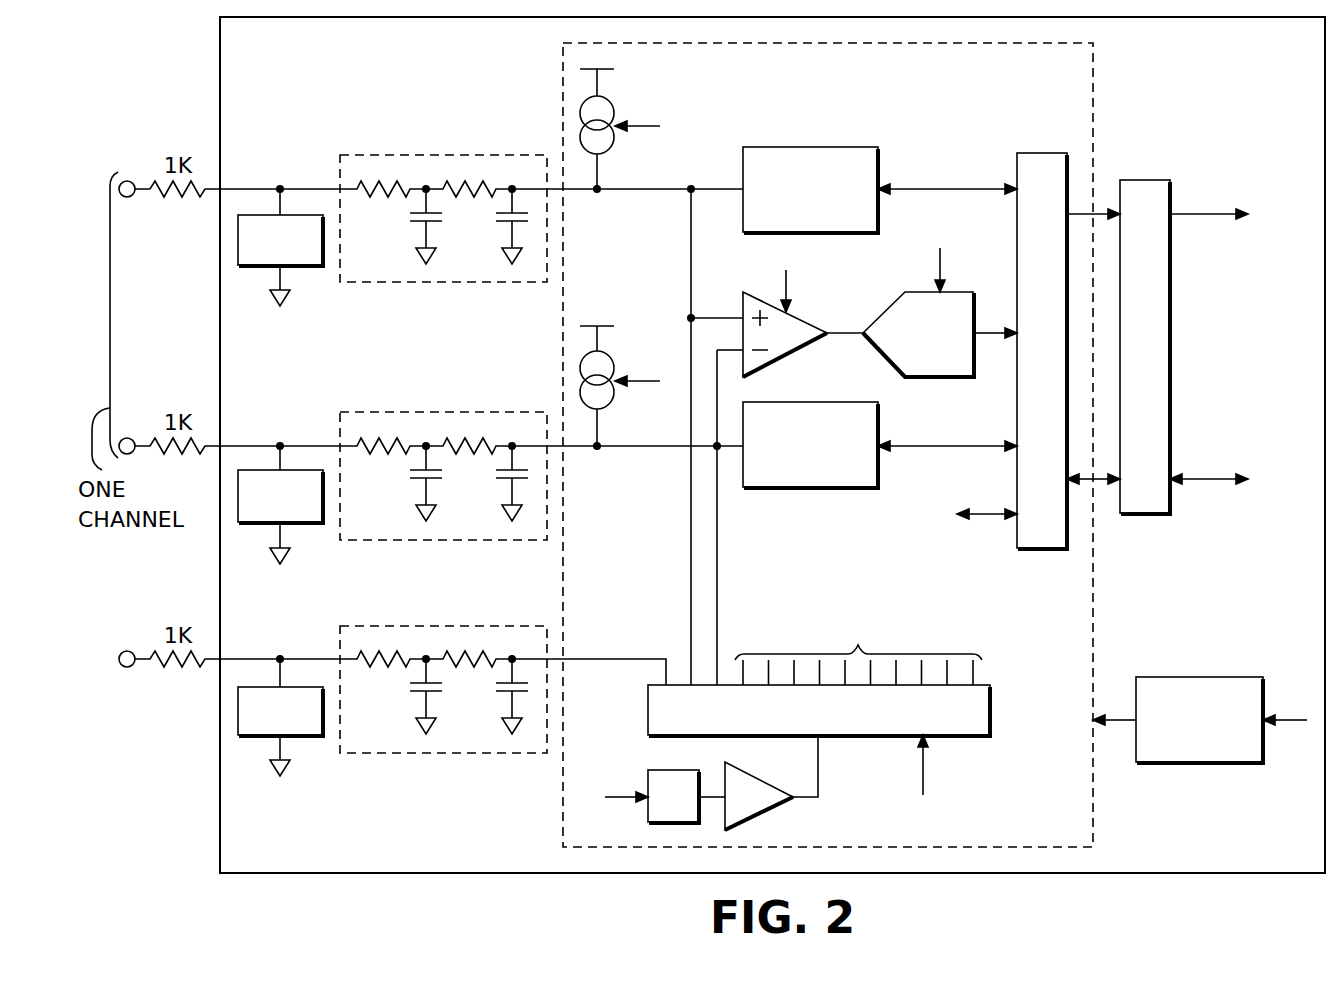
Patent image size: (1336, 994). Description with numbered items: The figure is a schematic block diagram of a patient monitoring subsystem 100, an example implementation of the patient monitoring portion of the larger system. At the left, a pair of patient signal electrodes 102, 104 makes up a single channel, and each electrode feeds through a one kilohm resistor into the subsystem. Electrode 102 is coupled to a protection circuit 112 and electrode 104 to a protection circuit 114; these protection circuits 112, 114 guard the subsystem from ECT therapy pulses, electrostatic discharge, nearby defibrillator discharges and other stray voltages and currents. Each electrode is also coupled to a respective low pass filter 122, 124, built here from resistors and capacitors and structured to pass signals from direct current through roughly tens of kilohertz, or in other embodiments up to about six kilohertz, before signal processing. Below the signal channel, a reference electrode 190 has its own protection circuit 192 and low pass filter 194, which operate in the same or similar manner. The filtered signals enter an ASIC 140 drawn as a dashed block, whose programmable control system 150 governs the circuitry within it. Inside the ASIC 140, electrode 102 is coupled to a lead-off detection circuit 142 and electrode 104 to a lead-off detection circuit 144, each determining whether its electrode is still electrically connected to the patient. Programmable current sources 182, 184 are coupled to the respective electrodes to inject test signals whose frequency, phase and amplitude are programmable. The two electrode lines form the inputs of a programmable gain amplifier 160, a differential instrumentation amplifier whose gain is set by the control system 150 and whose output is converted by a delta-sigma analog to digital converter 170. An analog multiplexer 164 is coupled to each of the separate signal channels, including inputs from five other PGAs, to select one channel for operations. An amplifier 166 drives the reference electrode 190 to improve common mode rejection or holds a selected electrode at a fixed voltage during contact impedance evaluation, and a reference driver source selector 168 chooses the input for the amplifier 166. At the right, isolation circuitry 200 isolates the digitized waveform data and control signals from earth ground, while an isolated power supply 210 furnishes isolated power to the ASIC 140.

The patient monitoring subsystem 100 is at (220, 62).
The patient signal electrode 102 is at (126, 181).
The patient signal electrode 104 is at (132, 438).
The reference electrode 190 is at (127, 651).
The protection circuit 112 is at (302, 268).
The protection circuit 114 is at (302, 525).
The protection circuit 192 is at (302, 738).
The low pass filter 122 is at (443, 155).
The low pass filter 124 is at (443, 412).
The low pass filter 194 is at (443, 626).
The ASIC 140 is at (1093, 72).
The lead-off detection circuit 142 is at (878, 155).
The lead-off detection circuit 144 is at (808, 488).
The control system 150 is at (1042, 153).
The programmable gain amplifier 160 is at (734, 298).
The analog multiplexer 164 is at (990, 716).
The amplifier 166 is at (762, 812).
The reference driver source selector 168 is at (672, 770).
The analog to digital converter 170 is at (884, 307).
The current source 182 is at (614, 110).
The current source 184 is at (614, 367).
The isolation circuitry 200 is at (1146, 180).
The power supply 210 is at (1202, 677).